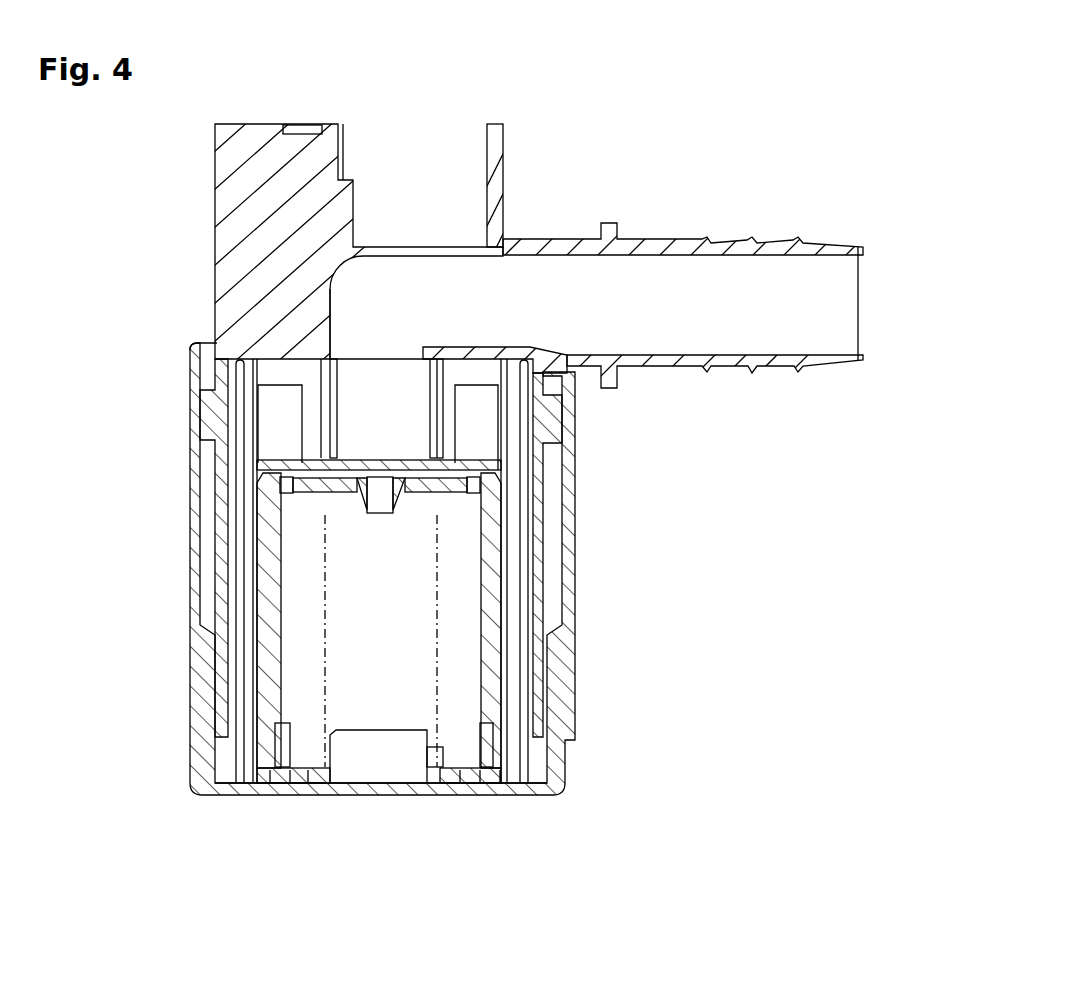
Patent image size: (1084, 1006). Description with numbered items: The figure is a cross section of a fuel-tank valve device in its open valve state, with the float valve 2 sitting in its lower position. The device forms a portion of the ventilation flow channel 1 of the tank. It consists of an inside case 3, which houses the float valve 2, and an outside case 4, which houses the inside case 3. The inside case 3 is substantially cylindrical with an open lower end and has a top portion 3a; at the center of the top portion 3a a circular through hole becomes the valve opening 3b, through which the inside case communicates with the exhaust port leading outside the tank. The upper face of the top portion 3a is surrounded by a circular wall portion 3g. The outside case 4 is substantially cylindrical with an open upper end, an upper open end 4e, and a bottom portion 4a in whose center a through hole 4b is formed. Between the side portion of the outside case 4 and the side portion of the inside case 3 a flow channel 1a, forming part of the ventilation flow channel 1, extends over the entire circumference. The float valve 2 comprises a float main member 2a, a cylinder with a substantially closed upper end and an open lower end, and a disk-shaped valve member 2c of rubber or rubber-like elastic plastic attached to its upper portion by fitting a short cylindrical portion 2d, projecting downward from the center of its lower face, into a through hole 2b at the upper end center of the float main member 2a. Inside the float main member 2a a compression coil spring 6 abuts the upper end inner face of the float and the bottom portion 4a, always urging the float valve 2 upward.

The ventilation flow channel 1 is at (673, 285).
The flow channel 1a is at (213, 466).
The float valve 2 is at (509, 590).
The float main member 2a is at (380, 571).
The through hole 2b is at (438, 495).
The valve member 2c is at (383, 515).
The short cylindrical portion 2d is at (325, 493).
The inside case 3 is at (218, 537).
The top portion 3a is at (470, 346).
The valve opening 3b is at (383, 352).
The circular wall portion 3g is at (507, 172).
The outside case 4 is at (575, 498).
The bottom portion 4a is at (518, 797).
The through hole 4b is at (382, 797).
The upper open end 4e is at (206, 343).
The compression coil spring 6 is at (318, 674).